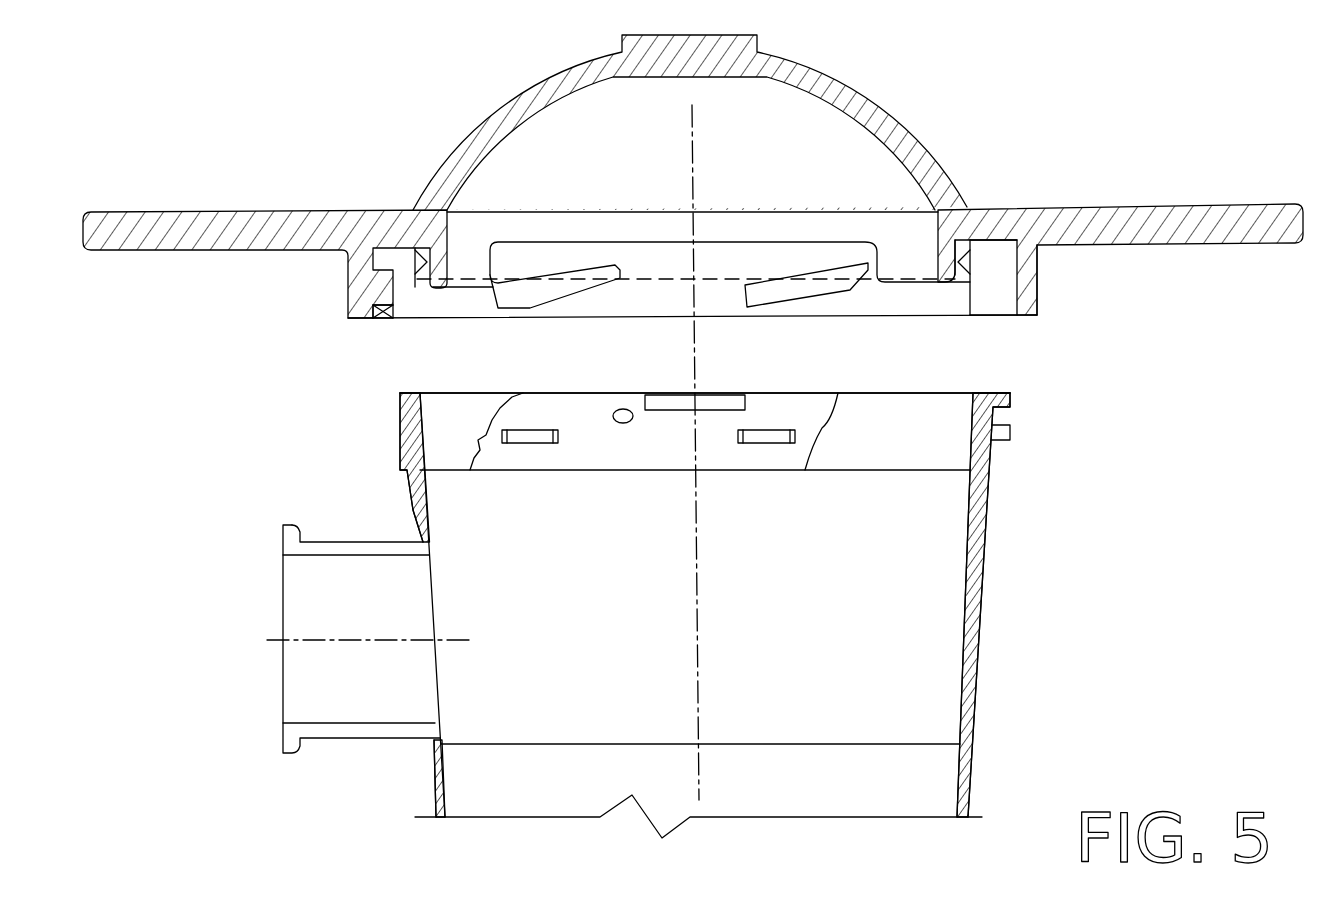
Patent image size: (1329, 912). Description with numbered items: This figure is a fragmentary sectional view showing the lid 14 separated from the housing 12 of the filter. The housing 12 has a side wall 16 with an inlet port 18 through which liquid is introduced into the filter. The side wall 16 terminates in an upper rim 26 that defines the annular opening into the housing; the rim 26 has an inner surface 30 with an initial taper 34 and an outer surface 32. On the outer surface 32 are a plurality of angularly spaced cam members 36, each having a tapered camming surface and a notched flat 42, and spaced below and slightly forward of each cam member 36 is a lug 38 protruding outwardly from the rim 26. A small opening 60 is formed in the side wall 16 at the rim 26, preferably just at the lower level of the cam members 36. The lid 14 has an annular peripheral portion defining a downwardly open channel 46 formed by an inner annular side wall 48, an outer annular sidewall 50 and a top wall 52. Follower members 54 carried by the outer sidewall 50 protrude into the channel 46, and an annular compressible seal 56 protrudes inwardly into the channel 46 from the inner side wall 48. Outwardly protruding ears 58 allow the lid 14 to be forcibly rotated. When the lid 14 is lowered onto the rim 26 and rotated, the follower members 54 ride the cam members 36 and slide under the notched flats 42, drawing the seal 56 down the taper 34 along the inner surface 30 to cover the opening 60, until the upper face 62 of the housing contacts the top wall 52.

The housing 12 is at (779, 615).
The lid 14 is at (918, 103).
The side wall 16 is at (970, 693).
The inlet port 18 is at (350, 741).
The upper rim 26 is at (900, 403).
The inner surface 30 is at (963, 442).
The outer surface 32 is at (992, 460).
The initial taper 34 is at (975, 393).
The cam member 36 is at (1012, 402).
The lug 38 is at (523, 445).
The notched flat 42 is at (657, 411).
The channel 46 is at (993, 282).
The inner annular side wall 48 is at (940, 247).
The outer annular sidewall 50 is at (1038, 263).
The top wall 52 is at (985, 240).
The follower member 54 is at (805, 290).
The annular compressible seal 56 is at (970, 261).
The ears 58 is at (183, 211).
The small opening 60 is at (620, 406).
The upper face 62 is at (409, 391).